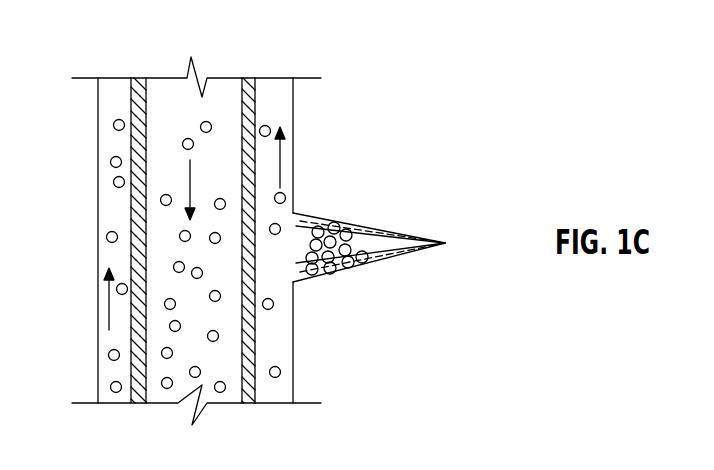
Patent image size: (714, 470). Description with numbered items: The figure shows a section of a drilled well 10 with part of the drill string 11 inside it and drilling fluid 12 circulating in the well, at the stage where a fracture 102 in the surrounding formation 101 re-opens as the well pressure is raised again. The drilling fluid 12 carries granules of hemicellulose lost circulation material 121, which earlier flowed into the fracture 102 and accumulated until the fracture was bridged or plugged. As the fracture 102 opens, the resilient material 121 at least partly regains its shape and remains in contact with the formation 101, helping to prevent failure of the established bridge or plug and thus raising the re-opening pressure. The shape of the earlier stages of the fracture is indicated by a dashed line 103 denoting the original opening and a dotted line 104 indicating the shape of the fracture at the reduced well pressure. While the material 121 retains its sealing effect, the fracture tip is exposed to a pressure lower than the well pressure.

The drilled well 10 is at (99, 43).
The drill string 11 is at (247, 397).
The drilling fluid 12 is at (179, 180).
The formation 101 is at (293, 363).
The fracture 102 is at (356, 268).
The dashed line 103 is at (313, 293).
The dotted line 104 is at (385, 220).
The lost circulation material 121 is at (285, 195).